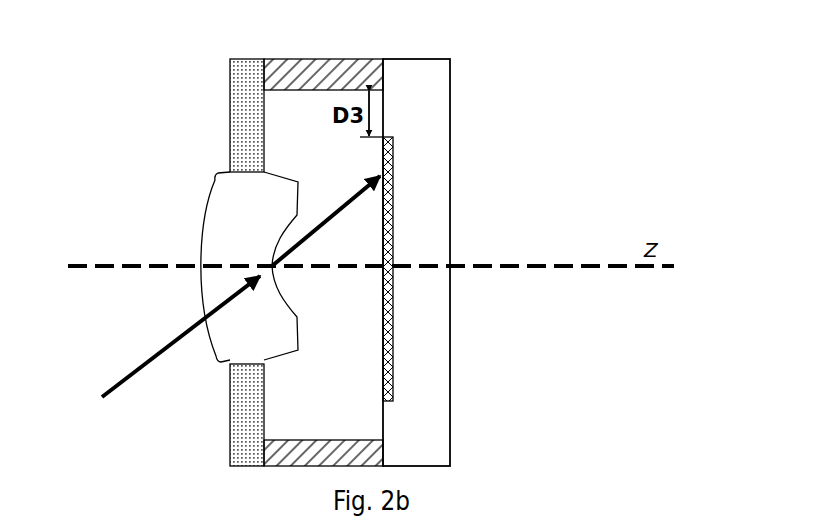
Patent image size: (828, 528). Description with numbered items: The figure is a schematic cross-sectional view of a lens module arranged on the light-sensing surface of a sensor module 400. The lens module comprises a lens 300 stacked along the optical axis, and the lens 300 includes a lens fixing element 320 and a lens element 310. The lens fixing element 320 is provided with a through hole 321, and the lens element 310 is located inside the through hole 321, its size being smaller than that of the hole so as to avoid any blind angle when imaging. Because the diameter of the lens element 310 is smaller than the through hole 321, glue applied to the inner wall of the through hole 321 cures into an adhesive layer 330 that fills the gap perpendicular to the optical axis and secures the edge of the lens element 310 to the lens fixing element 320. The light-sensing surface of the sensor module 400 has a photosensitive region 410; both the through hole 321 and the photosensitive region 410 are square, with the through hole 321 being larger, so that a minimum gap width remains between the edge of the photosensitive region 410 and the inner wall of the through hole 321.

The lens 300 is at (138, 68).
The lens element 310 is at (233, 195).
The lens fixing element 320 is at (272, 74).
The through hole 321 is at (322, 115).
The adhesive layer 330 is at (242, 120).
The sensor module 400 is at (418, 77).
The photosensitive region 410 is at (394, 155).